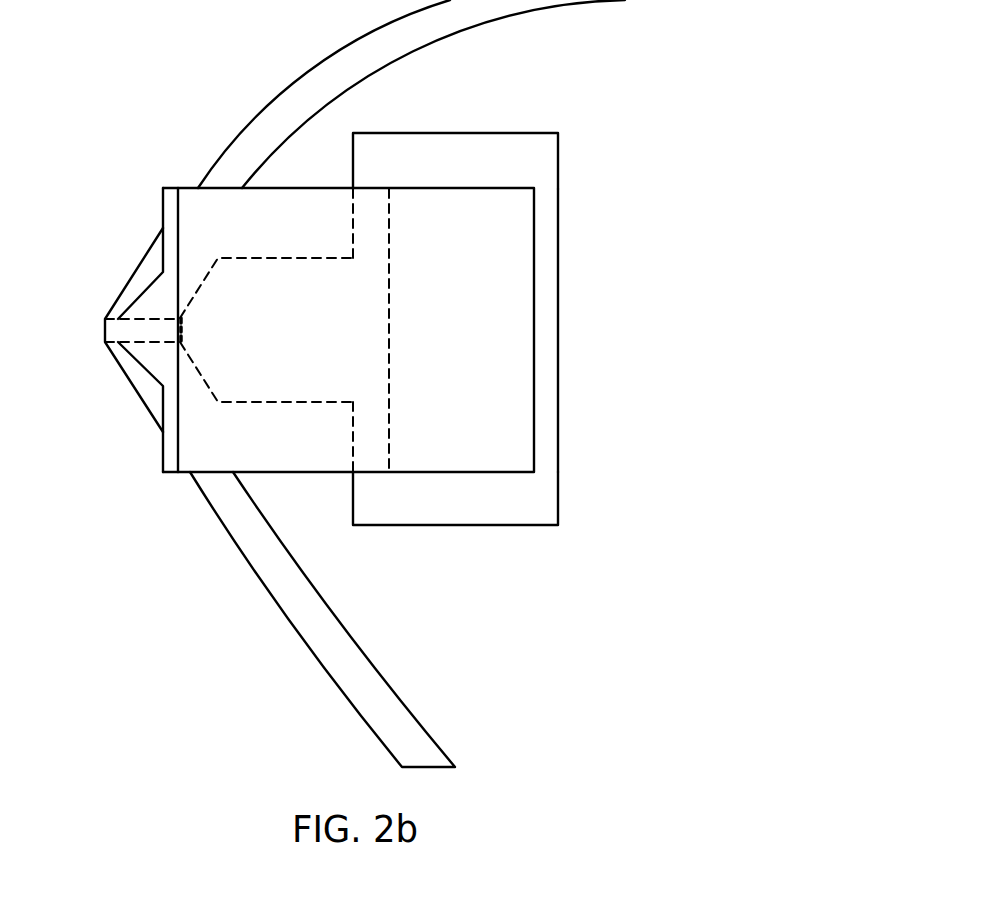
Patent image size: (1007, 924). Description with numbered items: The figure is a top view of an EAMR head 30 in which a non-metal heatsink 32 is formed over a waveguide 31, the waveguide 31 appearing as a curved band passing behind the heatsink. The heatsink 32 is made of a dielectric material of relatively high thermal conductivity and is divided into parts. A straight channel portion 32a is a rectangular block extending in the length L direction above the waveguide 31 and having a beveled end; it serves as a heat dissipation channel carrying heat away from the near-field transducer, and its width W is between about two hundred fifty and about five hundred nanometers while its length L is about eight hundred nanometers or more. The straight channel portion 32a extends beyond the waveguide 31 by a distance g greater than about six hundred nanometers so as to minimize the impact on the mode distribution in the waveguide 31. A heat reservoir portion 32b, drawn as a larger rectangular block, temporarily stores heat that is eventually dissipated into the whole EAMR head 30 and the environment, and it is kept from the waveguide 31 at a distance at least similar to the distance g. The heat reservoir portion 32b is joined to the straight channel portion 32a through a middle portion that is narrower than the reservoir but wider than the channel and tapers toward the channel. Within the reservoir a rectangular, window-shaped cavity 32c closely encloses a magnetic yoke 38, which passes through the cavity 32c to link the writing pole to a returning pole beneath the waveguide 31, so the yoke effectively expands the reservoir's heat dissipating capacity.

The EAMR head 30 is at (657, 158).
The waveguide 31 is at (387, 682).
The non-metal heatsink 32 is at (558, 325).
The straight channel portion 32a is at (160, 318).
The heat reservoir portion 32b is at (458, 112).
The transition portion (cavity) 32c is at (527, 455).
The magnetic yoke 38 is at (534, 225).
The distance g is at (178, 343).
The width W is at (70, 292).
The length L is at (178, 427).